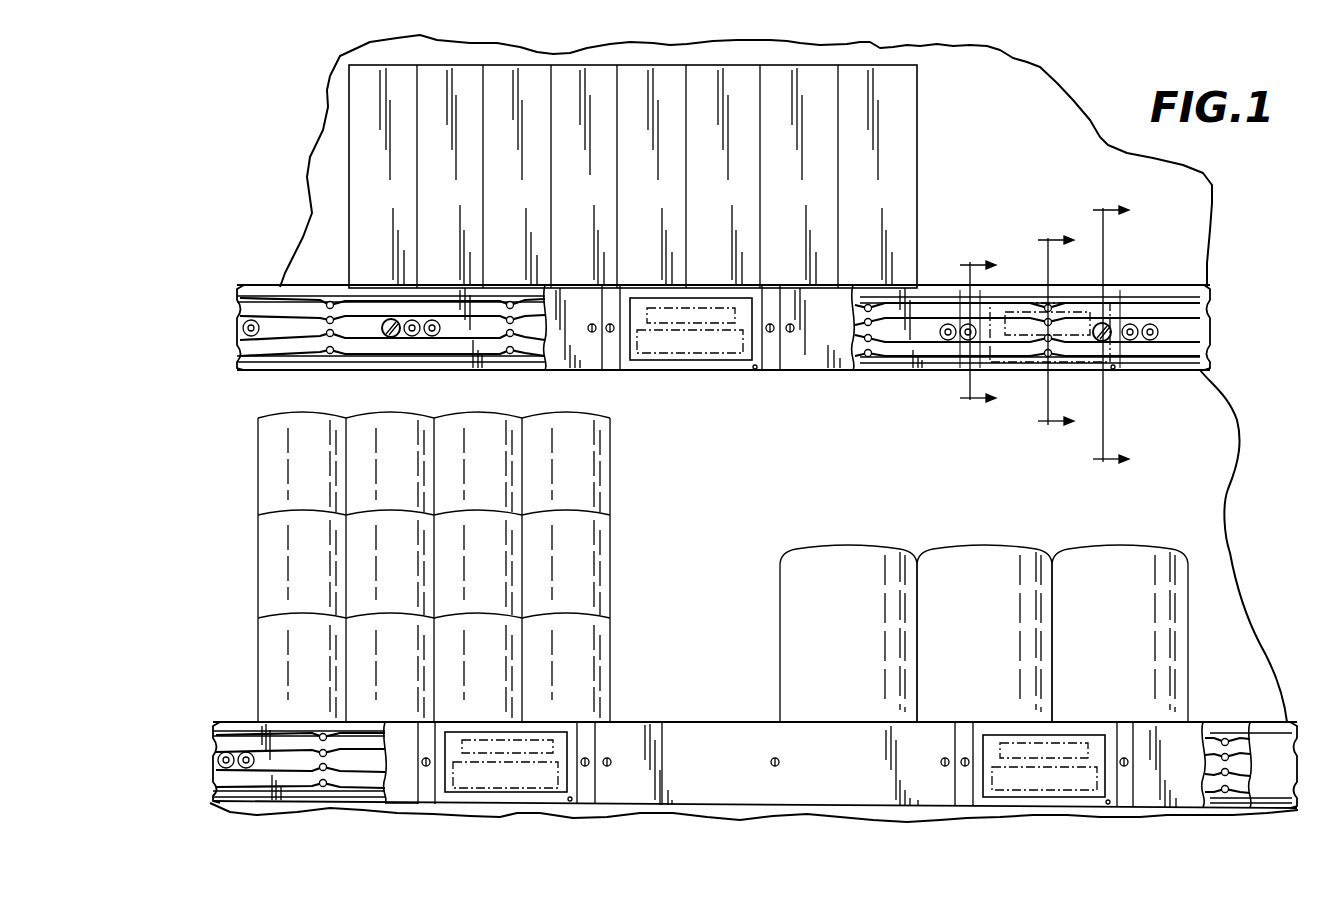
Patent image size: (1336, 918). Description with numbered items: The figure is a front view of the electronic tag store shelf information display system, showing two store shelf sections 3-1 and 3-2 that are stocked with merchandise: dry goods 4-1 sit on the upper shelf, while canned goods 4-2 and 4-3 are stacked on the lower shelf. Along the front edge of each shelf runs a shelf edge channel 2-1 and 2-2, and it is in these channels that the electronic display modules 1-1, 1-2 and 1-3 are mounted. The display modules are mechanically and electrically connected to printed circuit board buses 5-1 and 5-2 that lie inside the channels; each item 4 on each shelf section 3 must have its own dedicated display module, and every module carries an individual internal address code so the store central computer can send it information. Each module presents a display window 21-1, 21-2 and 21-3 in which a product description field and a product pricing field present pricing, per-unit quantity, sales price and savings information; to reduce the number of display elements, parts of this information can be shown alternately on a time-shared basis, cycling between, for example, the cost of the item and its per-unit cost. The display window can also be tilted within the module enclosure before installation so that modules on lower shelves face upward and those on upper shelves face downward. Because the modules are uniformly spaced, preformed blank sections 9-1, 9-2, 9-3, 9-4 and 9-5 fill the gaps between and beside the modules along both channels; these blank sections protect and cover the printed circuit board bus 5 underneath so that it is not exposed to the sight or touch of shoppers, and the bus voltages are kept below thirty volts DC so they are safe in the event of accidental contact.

The display module 1-1 is at (557, 713).
The display module 1-2 is at (1037, 724).
The display module 1-3 is at (707, 369).
The shelf edge channel 2-1 is at (215, 794).
The shelf edge channel 2-2 is at (262, 374).
The store shelf section 3-1 is at (1206, 202).
The store shelf section 3-2 is at (1226, 592).
The dry goods 4-1 is at (906, 158).
The canned goods 4-2 is at (604, 556).
The canned goods 4-3 is at (790, 610).
The printed circuit board bus 5-1 is at (316, 728).
The printed circuit board bus 5-2 is at (880, 360).
The preformed blank section 9-1 is at (556, 356).
The preformed blank section 9-2 is at (832, 360).
The preformed blank section 9-3 is at (400, 746).
The preformed blank section 9-4 is at (1192, 742).
The preformed blank section 9-5 is at (748, 740).
The display window 21-1 is at (1084, 730).
The display window 21-2 is at (520, 740).
The display window 21-3 is at (628, 372).
The shelf section 3 is at (987, 332).
The item 4 is at (1065, 331).
The printed circuit board bus 5 is at (1120, 335).